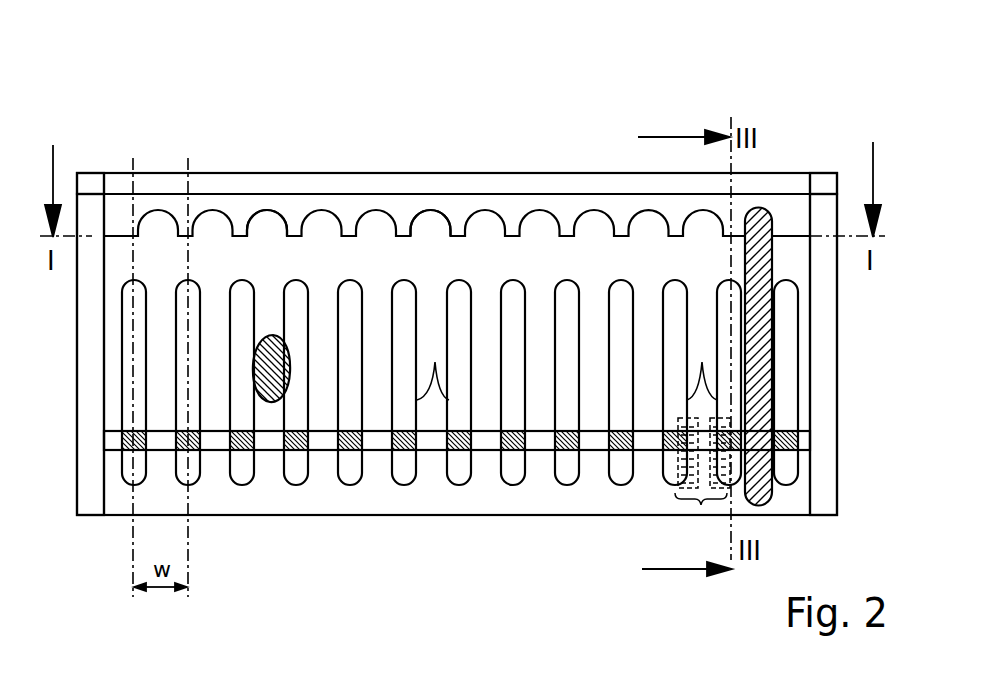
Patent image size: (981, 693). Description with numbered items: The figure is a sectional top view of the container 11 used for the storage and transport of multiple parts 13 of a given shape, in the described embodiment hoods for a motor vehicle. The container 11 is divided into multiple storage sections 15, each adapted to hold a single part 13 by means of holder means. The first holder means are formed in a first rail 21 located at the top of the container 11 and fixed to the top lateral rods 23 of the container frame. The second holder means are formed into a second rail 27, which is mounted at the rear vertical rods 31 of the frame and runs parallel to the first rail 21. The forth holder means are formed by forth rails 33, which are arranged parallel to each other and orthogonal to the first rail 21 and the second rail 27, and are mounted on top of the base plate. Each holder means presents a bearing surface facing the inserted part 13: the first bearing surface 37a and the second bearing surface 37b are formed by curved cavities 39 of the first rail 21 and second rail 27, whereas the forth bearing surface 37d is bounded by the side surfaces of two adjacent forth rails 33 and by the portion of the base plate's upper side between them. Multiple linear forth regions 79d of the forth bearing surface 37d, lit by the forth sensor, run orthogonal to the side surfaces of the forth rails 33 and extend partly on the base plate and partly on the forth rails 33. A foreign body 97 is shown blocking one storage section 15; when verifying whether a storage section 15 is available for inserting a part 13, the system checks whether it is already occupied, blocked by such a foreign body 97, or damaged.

The container 11 is at (143, 118).
The part 13 is at (760, 263).
The storage section 15 is at (786, 152).
The first rail 21 is at (375, 442).
The top lateral rods 23 is at (95, 503).
The second rail 27 is at (345, 205).
The rear vertical rods 31 is at (90, 182).
The forth rails 33 is at (565, 293).
The first bearing surface 37a is at (417, 442).
The second bearing surface 37b is at (438, 218).
The forth bearing surface 37d is at (571, 367).
The curved cavities 39 is at (278, 220).
The linear forth regions 79d is at (700, 505).
The foreign body 97 is at (270, 402).